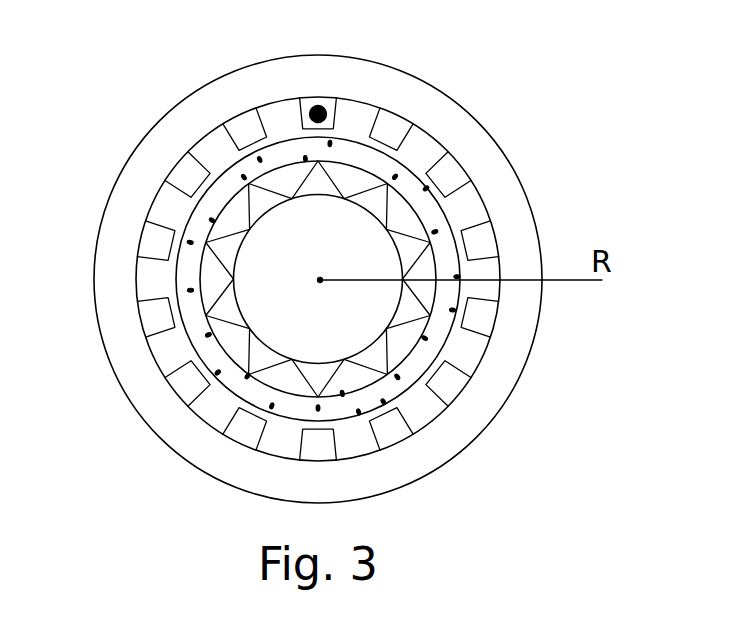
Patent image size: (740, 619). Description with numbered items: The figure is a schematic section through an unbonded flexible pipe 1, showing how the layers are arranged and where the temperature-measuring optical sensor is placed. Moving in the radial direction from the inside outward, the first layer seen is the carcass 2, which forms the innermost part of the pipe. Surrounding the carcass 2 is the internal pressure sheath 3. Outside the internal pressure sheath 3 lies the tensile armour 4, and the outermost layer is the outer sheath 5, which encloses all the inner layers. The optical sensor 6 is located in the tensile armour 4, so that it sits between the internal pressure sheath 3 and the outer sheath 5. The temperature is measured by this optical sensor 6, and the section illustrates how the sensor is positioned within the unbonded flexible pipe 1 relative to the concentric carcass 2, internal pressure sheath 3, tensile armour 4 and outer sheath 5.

The unbonded flexible pipe 1 is at (493, 450).
The carcass 2 is at (375, 205).
The internal pressure sheath 3 is at (200, 222).
The tensile armour 4 is at (168, 307).
The outer sheath 5 is at (170, 420).
The optical sensor 6 is at (317, 104).